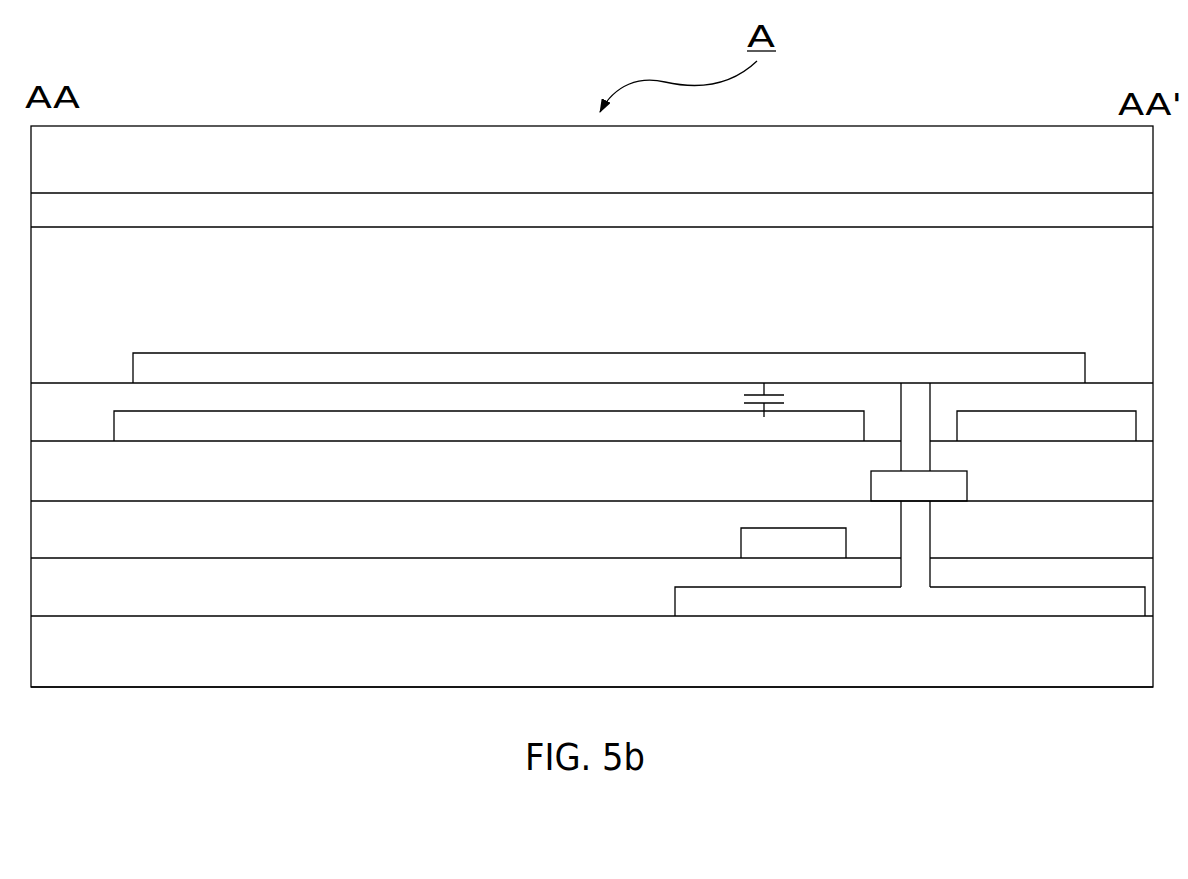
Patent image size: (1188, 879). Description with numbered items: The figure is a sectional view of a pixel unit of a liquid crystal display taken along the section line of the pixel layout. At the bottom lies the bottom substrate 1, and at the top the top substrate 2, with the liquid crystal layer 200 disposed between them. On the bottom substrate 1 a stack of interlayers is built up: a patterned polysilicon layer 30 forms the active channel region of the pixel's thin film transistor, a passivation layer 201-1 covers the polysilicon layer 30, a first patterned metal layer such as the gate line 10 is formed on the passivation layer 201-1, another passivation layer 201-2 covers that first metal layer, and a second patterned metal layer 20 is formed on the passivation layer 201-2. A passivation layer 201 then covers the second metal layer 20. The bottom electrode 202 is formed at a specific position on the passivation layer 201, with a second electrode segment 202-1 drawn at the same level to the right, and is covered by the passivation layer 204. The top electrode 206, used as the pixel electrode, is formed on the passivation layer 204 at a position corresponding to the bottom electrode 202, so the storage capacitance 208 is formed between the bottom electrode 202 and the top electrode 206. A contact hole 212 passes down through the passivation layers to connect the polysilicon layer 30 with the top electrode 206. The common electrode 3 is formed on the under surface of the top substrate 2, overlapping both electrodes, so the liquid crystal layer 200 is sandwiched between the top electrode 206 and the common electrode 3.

The bottom substrate 1 is at (592, 666).
The top substrate 2 is at (592, 173).
The common electrode 3 is at (592, 214).
The gate line 10 is at (770, 521).
The second metal layer M2 20 is at (938, 468).
The patterned polysilicon layer 30 is at (871, 619).
The liquid crystal layer 200 is at (592, 337).
The passivation layer 201 is at (592, 479).
The passivation layer 201-1 is at (592, 595).
The passivation layer 201-2 is at (592, 536).
The bottom electrode 202 is at (489, 427).
The first electrode portion 202-1 is at (1046, 427).
The passivation layer 204 is at (592, 418).
The top electrode 206 is at (609, 368).
The storage capacitance 208 is at (784, 383).
The contact hole 212 is at (933, 539).